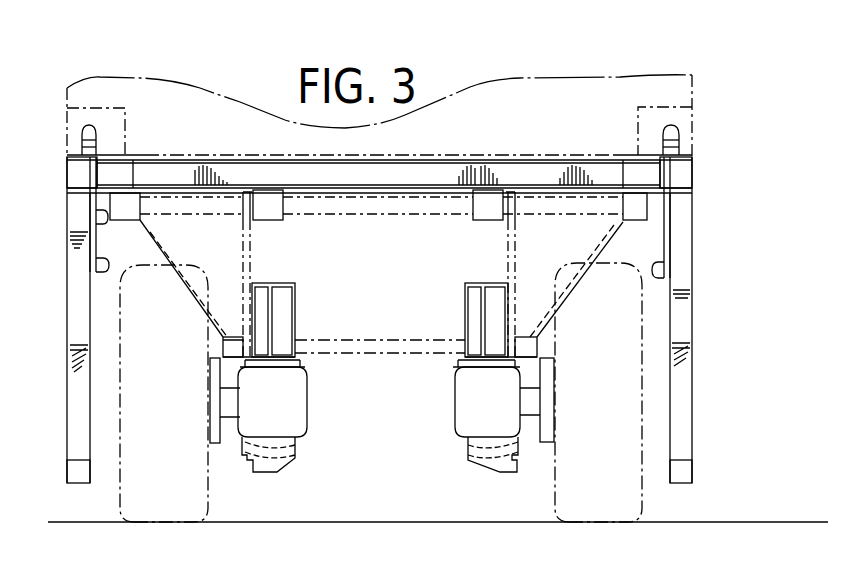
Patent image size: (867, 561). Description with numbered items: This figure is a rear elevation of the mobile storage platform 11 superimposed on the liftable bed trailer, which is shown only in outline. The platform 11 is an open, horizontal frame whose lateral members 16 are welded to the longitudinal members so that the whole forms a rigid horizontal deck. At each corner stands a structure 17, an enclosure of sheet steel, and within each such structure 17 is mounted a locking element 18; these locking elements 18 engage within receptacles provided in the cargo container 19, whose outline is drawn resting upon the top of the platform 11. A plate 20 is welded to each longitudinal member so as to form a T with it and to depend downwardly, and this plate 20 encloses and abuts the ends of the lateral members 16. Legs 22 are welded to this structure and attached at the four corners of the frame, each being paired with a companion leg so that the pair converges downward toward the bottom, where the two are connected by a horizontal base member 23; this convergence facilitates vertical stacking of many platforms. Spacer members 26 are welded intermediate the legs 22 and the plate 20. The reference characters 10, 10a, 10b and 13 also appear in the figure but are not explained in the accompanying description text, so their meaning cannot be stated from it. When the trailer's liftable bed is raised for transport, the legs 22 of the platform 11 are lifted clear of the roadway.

The suspension assembly 10 is at (614, 244).
The spring unit 10a is at (273, 298).
The hanger strap 10b is at (648, 208).
The mobile storage platform 11 is at (697, 170).
The diagonal brace 13 is at (150, 238).
The lateral members 16 is at (426, 170).
The corner structures 17 is at (64, 175).
The locking elements 18 is at (80, 142).
The cargo container 19 is at (234, 93).
The plate 20 is at (93, 214).
The legs 22 is at (74, 364).
The horizontal base members 23 is at (74, 474).
The spacer members 26 is at (90, 266).